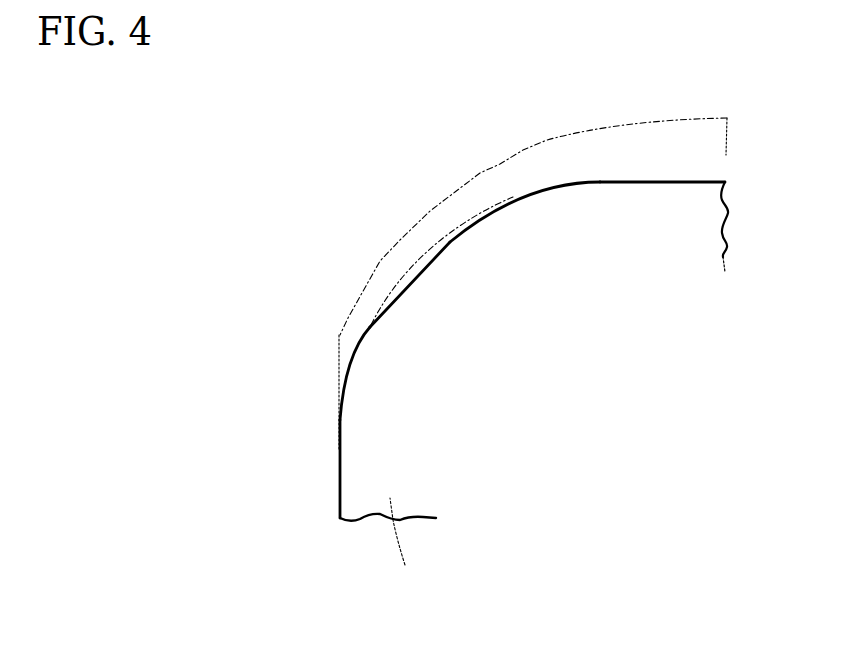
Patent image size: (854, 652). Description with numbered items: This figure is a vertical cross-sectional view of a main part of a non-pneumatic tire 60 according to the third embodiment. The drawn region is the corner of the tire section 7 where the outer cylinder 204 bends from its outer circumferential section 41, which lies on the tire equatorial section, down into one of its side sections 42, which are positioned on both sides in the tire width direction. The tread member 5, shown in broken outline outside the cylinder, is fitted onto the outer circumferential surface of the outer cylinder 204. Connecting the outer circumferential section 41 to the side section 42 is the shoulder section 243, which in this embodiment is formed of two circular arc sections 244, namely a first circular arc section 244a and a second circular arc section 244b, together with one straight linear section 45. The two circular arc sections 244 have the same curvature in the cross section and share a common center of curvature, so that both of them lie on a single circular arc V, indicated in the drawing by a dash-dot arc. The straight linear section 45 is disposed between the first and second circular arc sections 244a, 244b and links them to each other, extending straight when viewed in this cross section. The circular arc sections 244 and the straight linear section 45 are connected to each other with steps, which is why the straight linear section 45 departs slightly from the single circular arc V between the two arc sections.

The tread member 5 is at (538, 137).
The tire section 7 is at (346, 528).
The outer circumferential section 41 is at (690, 182).
The side section 42 is at (338, 490).
The straight linear section 45 is at (423, 270).
The non-pneumatic tire 60 is at (198, 207).
The outer cylinder 204 is at (402, 551).
The shoulder section 243 is at (417, 122).
The circular arc section 244 is at (441, 262).
The first circular arc section 244a is at (513, 197).
The second circular arc section 244b is at (355, 352).
The single circular arc V is at (375, 275).